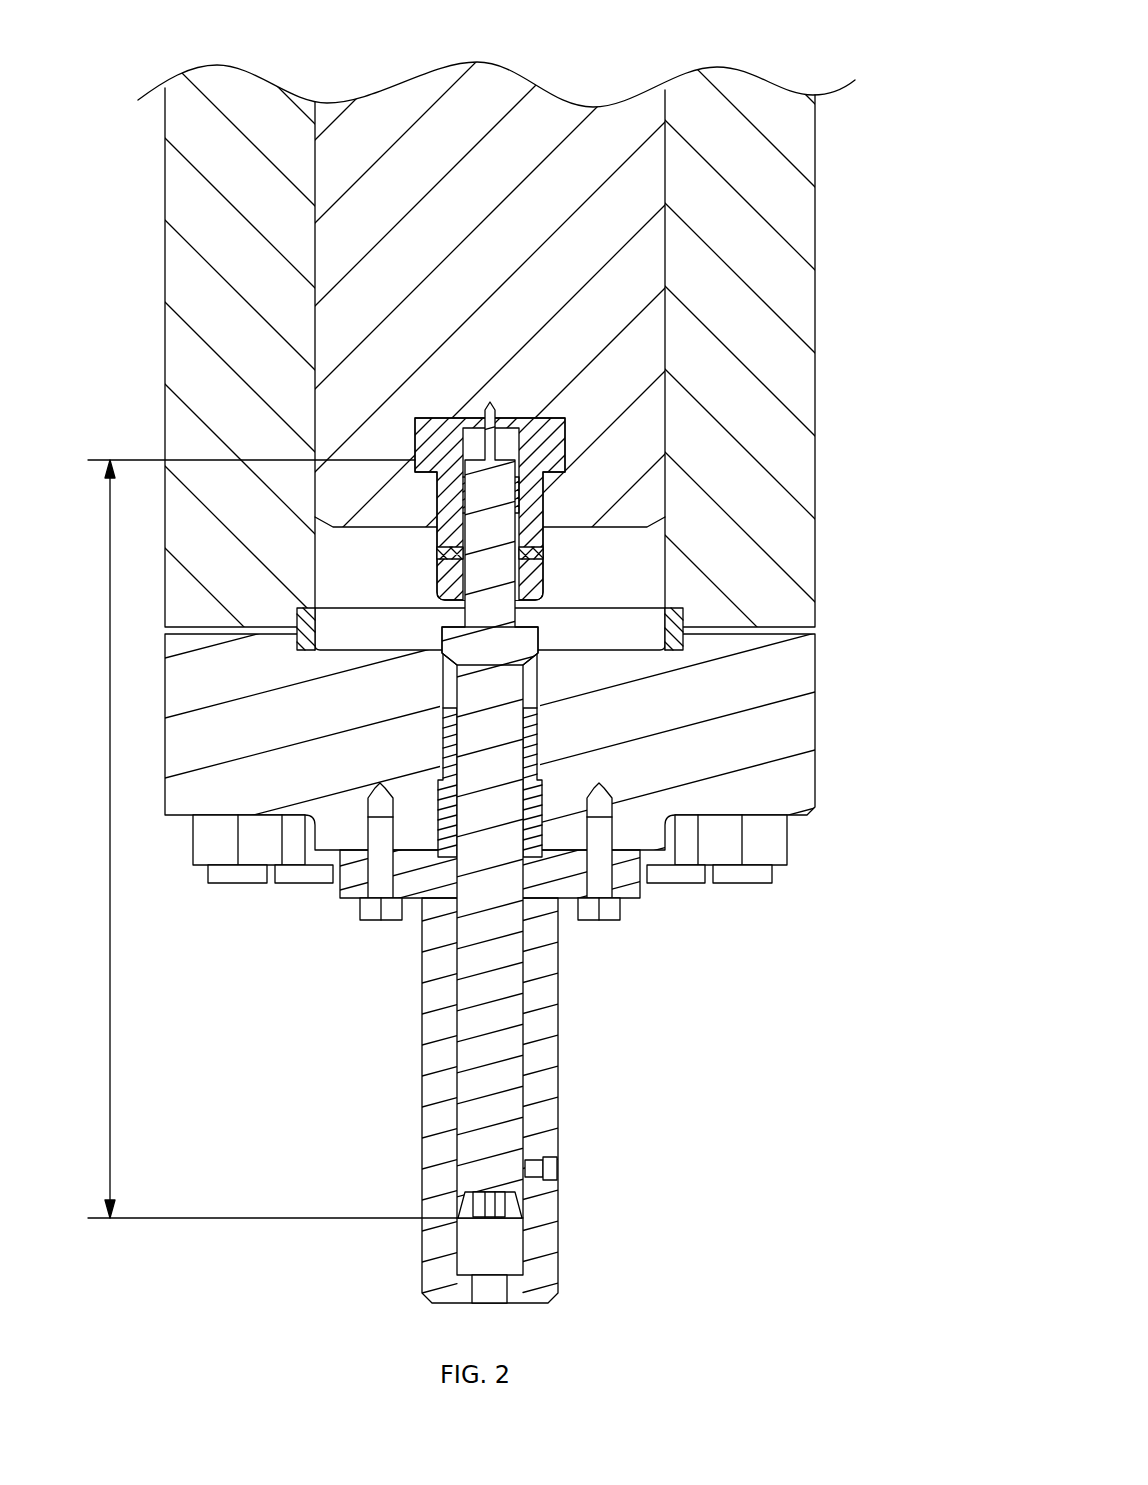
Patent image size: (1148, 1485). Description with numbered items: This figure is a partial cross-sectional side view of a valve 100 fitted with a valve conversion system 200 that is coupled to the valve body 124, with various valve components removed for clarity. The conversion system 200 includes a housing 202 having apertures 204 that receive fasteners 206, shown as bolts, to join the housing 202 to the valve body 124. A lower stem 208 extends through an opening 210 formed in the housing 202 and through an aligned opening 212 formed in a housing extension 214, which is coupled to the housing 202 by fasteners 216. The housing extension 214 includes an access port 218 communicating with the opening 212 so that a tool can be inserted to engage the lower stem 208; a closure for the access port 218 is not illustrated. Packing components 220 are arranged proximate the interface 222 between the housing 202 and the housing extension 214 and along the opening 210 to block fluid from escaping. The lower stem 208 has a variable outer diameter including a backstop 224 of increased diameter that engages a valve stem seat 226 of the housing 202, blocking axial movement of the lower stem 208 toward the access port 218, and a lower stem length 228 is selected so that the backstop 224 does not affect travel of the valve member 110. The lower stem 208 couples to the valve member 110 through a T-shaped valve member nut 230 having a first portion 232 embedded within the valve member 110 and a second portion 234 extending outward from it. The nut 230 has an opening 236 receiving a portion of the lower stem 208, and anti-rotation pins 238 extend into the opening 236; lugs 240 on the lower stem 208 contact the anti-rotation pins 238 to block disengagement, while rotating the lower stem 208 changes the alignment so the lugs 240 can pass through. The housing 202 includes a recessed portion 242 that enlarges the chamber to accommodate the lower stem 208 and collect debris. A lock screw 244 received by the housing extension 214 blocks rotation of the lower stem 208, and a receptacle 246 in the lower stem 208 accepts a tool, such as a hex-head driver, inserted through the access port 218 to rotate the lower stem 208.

The valve 100 is at (504, 673).
The valve member 110 is at (517, 443).
The valve body 124 is at (796, 322).
The valve conversion system 200 is at (543, 874).
The housing 202 is at (797, 716).
The apertures 204 is at (557, 869).
The fasteners 206 is at (742, 890).
The lower stem 208 is at (495, 838).
The opening 210 is at (430, 742).
The opening 212 is at (449, 1246).
The housing extension 214 is at (547, 1240).
The fasteners 216 is at (376, 920).
The access port 218 is at (477, 1309).
The packing components 220 is at (573, 740).
The interface 222 is at (331, 864).
The backstop 224 is at (547, 632).
The valve stem seat 226 is at (443, 662).
The lower stem length 228 is at (272, 839).
The valve member nut 230 is at (487, 459).
The first portion 232 is at (418, 404).
The second portion 234 is at (404, 569).
The opening 236 is at (568, 498).
The anti-rotation pins 238 is at (536, 556).
The lugs 240 is at (434, 517).
The recessed portion 242 is at (688, 648).
The lock screw 244 is at (558, 1170).
The receptacle 246 is at (503, 1230).